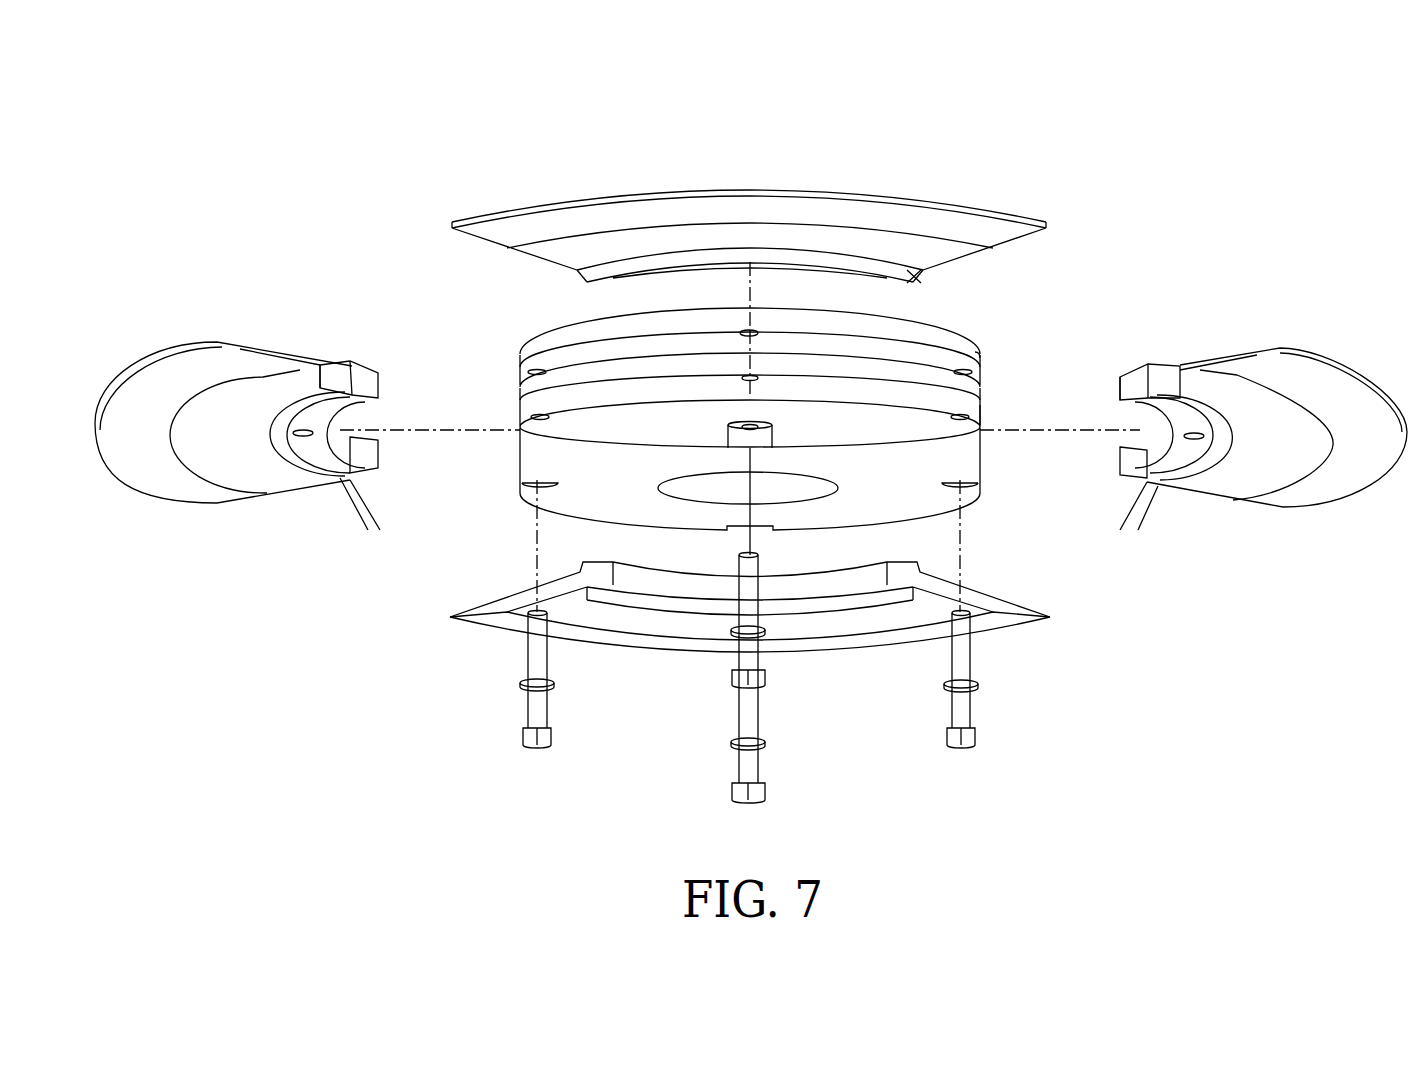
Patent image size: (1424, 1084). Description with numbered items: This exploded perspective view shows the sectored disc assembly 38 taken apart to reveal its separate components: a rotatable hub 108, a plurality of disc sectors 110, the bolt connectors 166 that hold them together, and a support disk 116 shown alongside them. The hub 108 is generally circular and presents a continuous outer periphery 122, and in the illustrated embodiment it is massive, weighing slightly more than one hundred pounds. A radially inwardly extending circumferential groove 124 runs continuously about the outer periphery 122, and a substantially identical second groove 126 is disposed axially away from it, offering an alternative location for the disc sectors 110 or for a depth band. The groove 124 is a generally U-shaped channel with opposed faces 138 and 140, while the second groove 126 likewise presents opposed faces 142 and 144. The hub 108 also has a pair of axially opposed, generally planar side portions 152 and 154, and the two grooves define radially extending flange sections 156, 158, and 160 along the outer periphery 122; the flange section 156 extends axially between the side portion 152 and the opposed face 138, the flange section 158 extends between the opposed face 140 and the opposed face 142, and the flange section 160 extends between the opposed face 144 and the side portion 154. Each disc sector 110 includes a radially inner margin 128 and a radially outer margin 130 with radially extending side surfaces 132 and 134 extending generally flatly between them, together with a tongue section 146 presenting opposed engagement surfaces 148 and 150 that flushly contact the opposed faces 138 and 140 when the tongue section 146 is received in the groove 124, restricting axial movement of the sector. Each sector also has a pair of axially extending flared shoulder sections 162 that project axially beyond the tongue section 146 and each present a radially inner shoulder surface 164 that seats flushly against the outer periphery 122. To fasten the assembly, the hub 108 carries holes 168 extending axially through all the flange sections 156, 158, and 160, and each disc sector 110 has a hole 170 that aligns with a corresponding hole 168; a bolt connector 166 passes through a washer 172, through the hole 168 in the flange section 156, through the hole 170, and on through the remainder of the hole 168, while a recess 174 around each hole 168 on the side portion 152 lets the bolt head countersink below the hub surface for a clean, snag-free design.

The sectored disc assembly 38 is at (1178, 130).
The rotatable hub 108 is at (985, 530).
The disc sectors 110 is at (880, 148).
The support disk 116 is at (760, 487).
The outer periphery 122 is at (963, 452).
The circumferential groove 124 is at (500, 445).
The second groove 126 is at (500, 386).
The radially inner margin 128 is at (373, 455).
The radially outer margin 130 is at (898, 196).
The side surface 132 is at (308, 500).
The side surface 134 is at (270, 340).
The opposed face 138 is at (608, 392).
The opposed face 140 is at (982, 416).
The opposed face 142 is at (668, 350).
The opposed face 144 is at (980, 348).
The tongue section 146 is at (393, 378).
The engagement surface 148 is at (368, 398).
The engagement surface 150 is at (358, 392).
The side portion 152 is at (651, 500).
The side portion 154 is at (718, 303).
The flange section 156 is at (522, 462).
The flange section 158 is at (520, 397).
The flange section 160 is at (522, 350).
The flared shoulder sections 162 is at (913, 280).
The radially inner shoulder surface 164 is at (363, 352).
The bolt connectors 166 is at (545, 746).
The holes 168 is at (758, 340).
The hole 170 is at (762, 277).
The washer 172 is at (553, 688).
The recess 174 is at (735, 442).